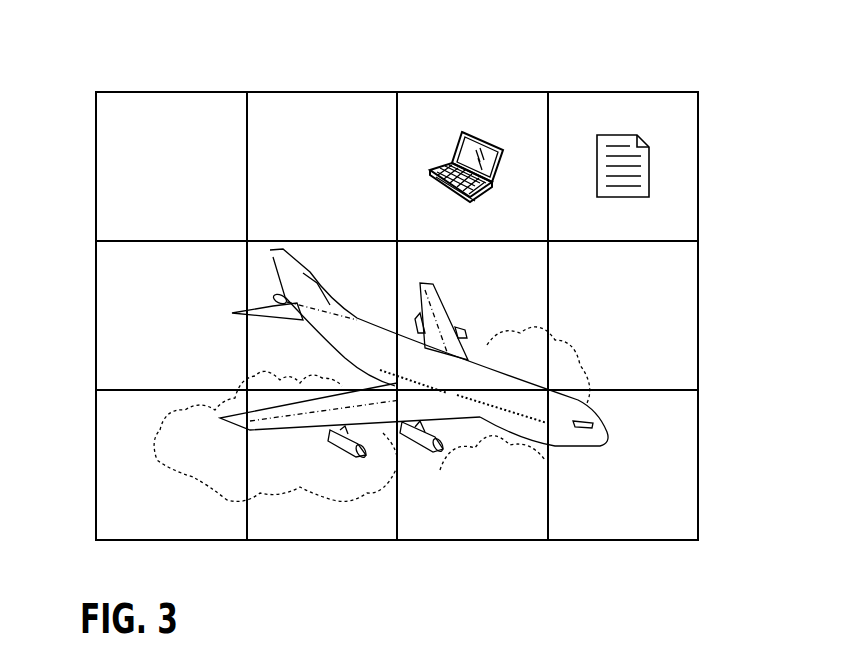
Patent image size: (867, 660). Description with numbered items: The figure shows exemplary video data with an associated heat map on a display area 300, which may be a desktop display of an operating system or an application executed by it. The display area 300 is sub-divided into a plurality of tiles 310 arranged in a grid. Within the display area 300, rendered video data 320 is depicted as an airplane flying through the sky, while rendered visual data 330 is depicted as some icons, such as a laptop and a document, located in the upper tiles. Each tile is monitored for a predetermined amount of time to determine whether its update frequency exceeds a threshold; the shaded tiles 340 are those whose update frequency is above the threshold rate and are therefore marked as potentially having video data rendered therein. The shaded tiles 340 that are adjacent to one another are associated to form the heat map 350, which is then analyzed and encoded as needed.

The display area 300 is at (700, 602).
The tiles 310 is at (113, 152).
The rendered video data 320 is at (273, 257).
The rendered visual data 330 is at (482, 134).
The shaded tiles 340 is at (112, 452).
The heat map 350 is at (698, 241).